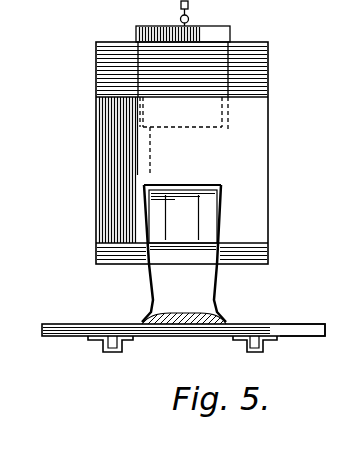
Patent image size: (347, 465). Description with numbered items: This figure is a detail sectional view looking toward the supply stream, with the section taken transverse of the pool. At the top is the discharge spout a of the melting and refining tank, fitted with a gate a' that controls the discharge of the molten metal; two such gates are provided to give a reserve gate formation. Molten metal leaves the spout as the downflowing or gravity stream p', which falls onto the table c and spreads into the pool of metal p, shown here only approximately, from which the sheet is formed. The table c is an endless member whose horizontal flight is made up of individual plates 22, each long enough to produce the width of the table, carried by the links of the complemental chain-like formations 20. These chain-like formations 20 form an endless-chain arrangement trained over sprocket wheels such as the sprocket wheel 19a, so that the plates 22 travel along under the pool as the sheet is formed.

The discharge spout a is at (163, 153).
The gate a' is at (184, 21).
The sprocket wheel 19a is at (48, 140).
The downflowing or gravity stream p' is at (165, 253).
The pool of metal p is at (197, 309).
The plates 22 is at (60, 323).
The table c is at (297, 332).
The chain-like formations 20 is at (111, 352).